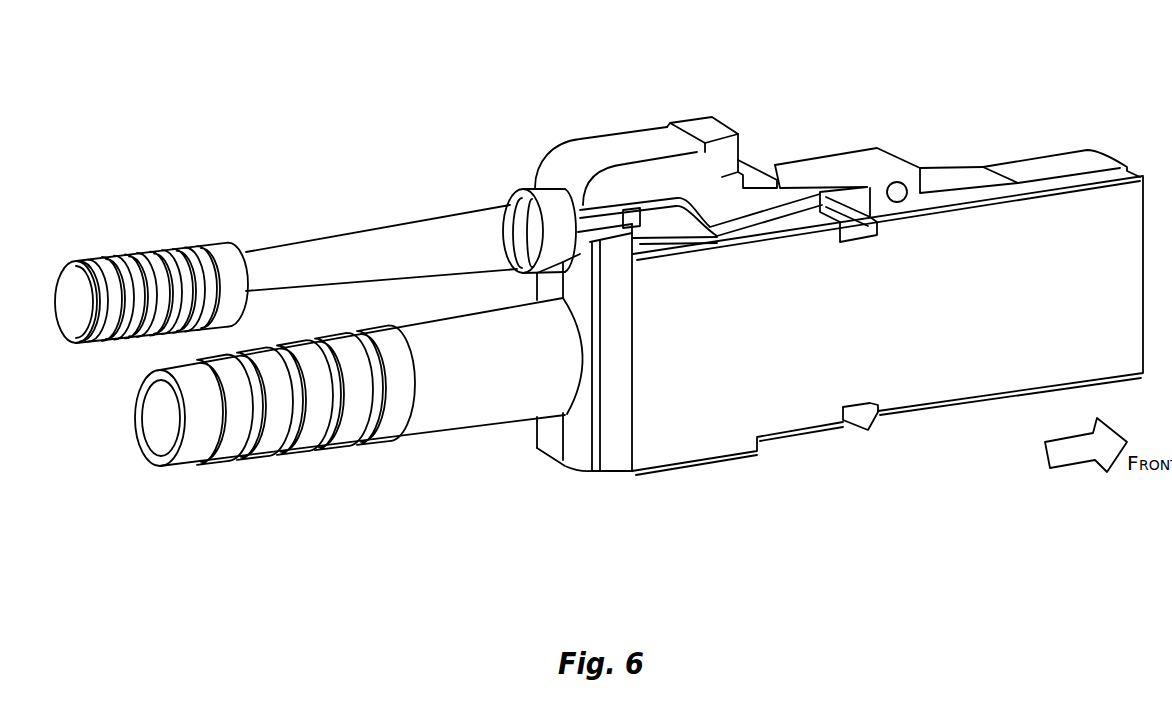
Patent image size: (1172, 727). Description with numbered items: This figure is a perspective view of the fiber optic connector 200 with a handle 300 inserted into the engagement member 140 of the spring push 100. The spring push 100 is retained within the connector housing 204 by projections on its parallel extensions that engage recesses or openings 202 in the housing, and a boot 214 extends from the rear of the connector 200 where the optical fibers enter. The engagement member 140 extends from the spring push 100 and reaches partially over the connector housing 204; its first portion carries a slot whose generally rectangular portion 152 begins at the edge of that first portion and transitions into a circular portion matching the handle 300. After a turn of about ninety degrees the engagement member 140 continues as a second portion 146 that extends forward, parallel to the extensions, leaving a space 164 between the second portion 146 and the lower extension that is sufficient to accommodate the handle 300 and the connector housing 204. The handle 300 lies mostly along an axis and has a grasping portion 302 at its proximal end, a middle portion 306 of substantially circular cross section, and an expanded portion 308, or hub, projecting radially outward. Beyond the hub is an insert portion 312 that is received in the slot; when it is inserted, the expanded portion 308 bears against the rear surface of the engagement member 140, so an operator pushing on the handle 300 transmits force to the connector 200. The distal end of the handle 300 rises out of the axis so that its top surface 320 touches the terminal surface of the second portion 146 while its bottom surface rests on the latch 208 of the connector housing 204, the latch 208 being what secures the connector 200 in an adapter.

The spring push 100 is at (610, 457).
The engagement member 140 is at (544, 86).
The second portion 146 is at (606, 138).
The portion 152 is at (598, 247).
The space 164 is at (715, 208).
The fiber optic connector 200 is at (1027, 97).
The recesses or openings 202 is at (848, 424).
The connector housing 204 is at (687, 450).
The latch 208 is at (776, 163).
The boot 214 is at (452, 422).
The handle 300 is at (170, 126).
The grasping portion 302 is at (186, 240).
The middle portion 306 is at (410, 230).
The expanded portion 308 is at (537, 187).
The insert portion 312 is at (597, 220).
The top surface 320 is at (668, 127).